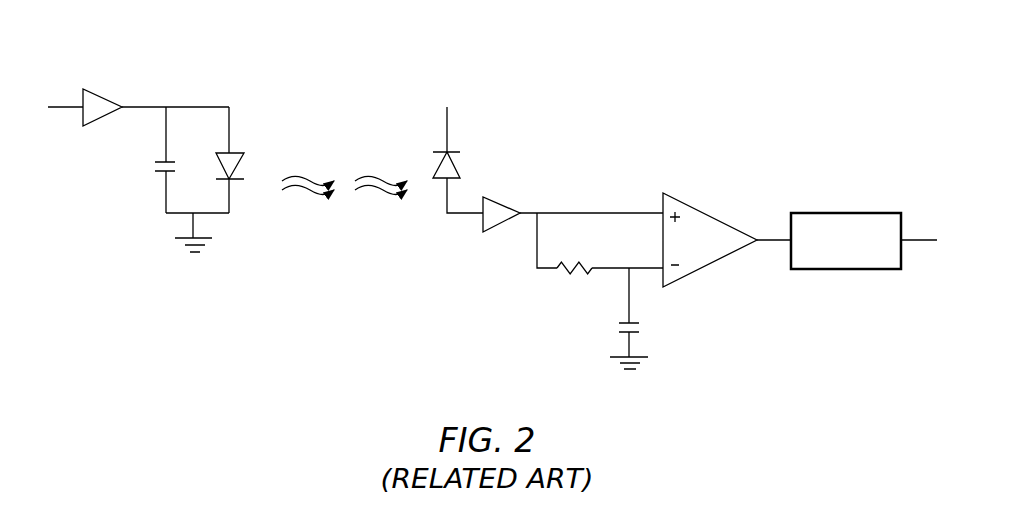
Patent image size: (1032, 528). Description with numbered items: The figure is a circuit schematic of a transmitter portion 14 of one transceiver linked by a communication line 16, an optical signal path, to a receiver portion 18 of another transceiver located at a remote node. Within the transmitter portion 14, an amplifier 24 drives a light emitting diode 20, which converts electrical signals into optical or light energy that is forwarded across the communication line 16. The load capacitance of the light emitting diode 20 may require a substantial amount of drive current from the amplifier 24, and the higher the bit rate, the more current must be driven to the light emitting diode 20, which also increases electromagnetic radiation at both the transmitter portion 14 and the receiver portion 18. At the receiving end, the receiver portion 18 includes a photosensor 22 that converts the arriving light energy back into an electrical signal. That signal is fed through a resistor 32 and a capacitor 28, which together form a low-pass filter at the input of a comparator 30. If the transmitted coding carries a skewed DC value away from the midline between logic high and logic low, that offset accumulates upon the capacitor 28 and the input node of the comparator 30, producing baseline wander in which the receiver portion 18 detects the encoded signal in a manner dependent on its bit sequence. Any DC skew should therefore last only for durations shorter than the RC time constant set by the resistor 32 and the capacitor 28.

The transmitter portion 14 is at (167, 142).
The communication line 16 is at (336, 227).
The receiver portion 18 is at (685, 238).
The light emitting diode 20 is at (237, 152).
The photosensor 22 is at (455, 166).
The amplifier 24 is at (105, 95).
The capacitor 28 is at (620, 333).
The comparator 30 is at (707, 210).
The resistor 32 is at (577, 278).